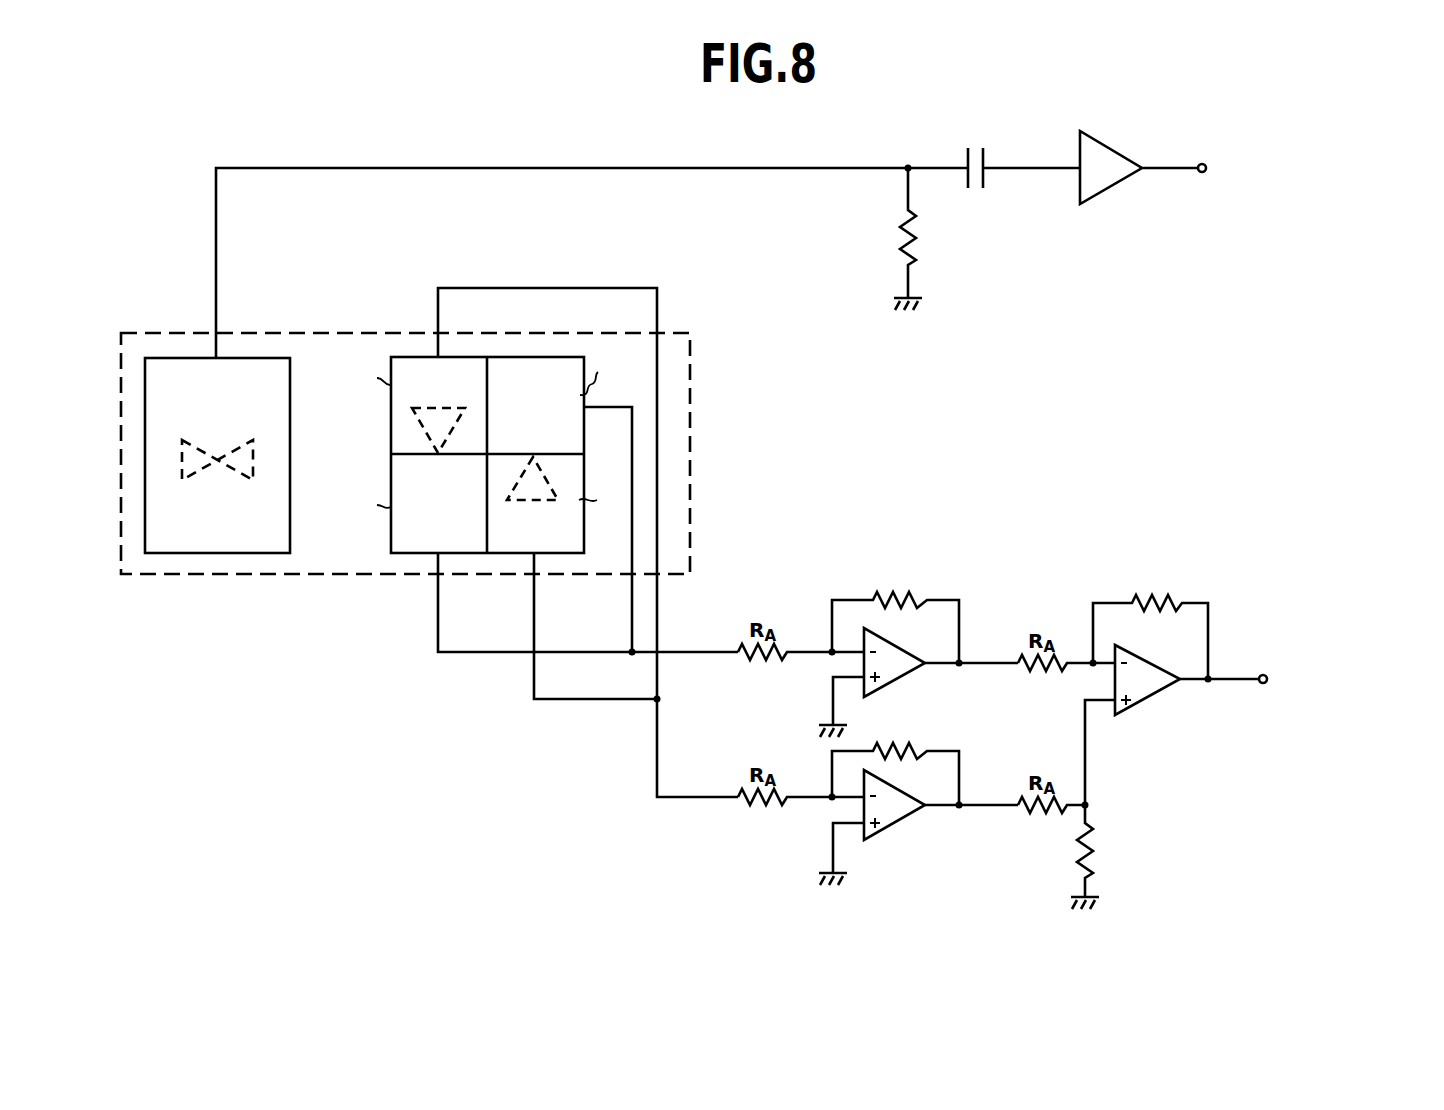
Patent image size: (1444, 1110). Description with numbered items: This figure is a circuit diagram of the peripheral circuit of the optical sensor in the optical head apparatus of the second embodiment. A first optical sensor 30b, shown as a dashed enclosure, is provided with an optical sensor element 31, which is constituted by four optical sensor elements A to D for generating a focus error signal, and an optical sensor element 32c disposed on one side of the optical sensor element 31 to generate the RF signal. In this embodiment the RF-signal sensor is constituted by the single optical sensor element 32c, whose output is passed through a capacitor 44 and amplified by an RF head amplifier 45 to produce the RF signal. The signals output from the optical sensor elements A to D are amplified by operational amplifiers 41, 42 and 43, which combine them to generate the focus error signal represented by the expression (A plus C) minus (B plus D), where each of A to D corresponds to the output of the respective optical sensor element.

The optical sensor element 31 is at (413, 352).
The optical sensor element 32c is at (216, 553).
The first optical sensor 30b is at (690, 400).
The capacitor 44 is at (968, 150).
The RF head amplifier 45 is at (1118, 152).
The operational amplifier 41 is at (903, 685).
The operational amplifier 42 is at (903, 827).
The operational amplifier 43 is at (1155, 695).